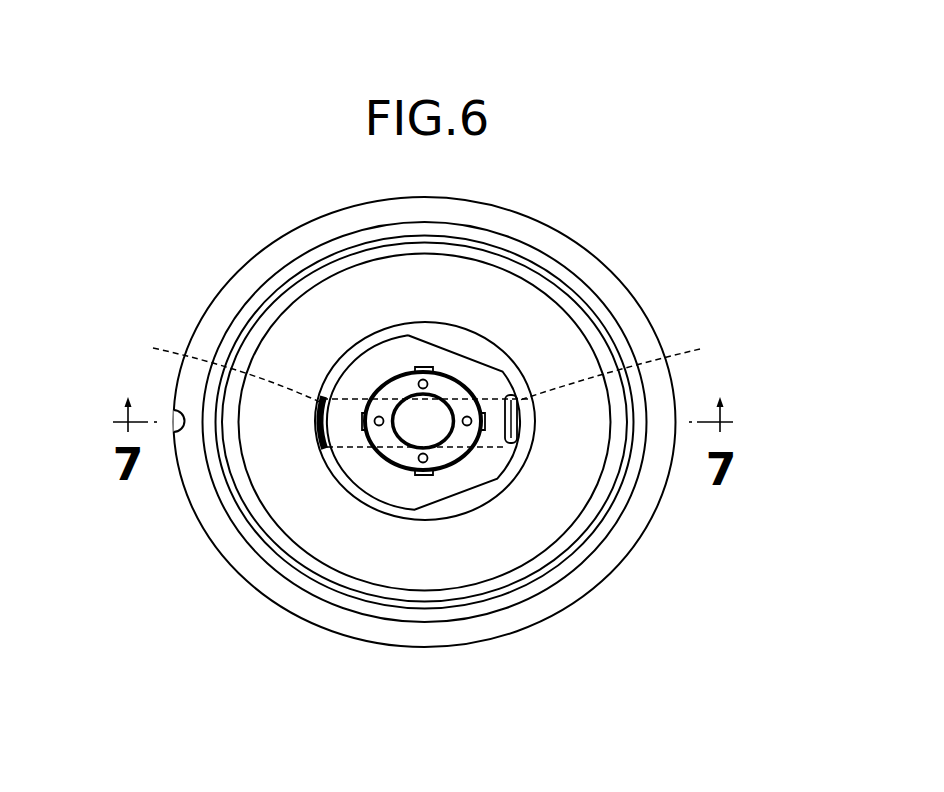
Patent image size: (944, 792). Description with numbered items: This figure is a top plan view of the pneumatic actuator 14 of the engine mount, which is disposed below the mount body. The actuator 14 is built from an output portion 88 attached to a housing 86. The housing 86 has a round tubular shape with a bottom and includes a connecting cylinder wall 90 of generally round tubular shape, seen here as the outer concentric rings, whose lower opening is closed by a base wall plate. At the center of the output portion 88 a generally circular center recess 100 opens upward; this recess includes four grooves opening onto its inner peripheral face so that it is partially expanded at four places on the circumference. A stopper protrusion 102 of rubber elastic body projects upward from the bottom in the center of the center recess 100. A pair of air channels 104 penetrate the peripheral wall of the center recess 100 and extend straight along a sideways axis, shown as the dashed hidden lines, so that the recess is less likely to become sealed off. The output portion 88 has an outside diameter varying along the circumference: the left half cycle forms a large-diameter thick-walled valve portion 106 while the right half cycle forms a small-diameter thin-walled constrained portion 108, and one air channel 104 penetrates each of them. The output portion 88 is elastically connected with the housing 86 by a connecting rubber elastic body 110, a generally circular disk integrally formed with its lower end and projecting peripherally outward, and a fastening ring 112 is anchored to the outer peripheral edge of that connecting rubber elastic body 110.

The actuator 14 is at (416, 402).
The housing 86 is at (300, 221).
The output portion 88 is at (541, 455).
The connecting cylinder wall 90 is at (392, 213).
The center recess 100 is at (389, 449).
The stopper protrusion 102 is at (430, 416).
The air channels 104 is at (427, 393).
The thick-walled valve portion 106 is at (368, 470).
The thin-walled constrained portion 108 is at (463, 473).
The connecting rubber elastic body 110 is at (303, 338).
The fastening ring 112 is at (222, 468).